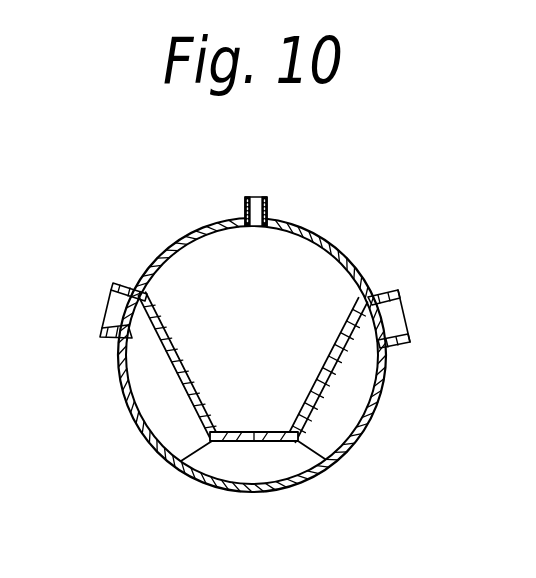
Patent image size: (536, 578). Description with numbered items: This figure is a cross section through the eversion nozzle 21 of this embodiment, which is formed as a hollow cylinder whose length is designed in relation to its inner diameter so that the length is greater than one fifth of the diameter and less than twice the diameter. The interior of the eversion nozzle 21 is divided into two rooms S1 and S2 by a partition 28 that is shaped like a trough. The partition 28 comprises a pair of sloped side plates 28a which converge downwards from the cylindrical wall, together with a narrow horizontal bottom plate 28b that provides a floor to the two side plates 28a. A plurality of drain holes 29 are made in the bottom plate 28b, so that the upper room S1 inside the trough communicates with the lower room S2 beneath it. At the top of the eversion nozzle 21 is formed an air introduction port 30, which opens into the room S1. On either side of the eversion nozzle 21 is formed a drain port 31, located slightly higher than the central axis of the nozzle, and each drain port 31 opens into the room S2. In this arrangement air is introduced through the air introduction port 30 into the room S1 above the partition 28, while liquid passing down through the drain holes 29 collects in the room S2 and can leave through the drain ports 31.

The eversion nozzle 21 is at (371, 263).
The partition 28 is at (290, 361).
The sloped side plates 28a is at (167, 328).
The bottom plate 28b is at (250, 431).
The drain holes 29 is at (268, 442).
The air introduction port 30 is at (252, 197).
The drain port 31 is at (115, 317).
The room S1 is at (300, 256).
The room S2 is at (303, 462).